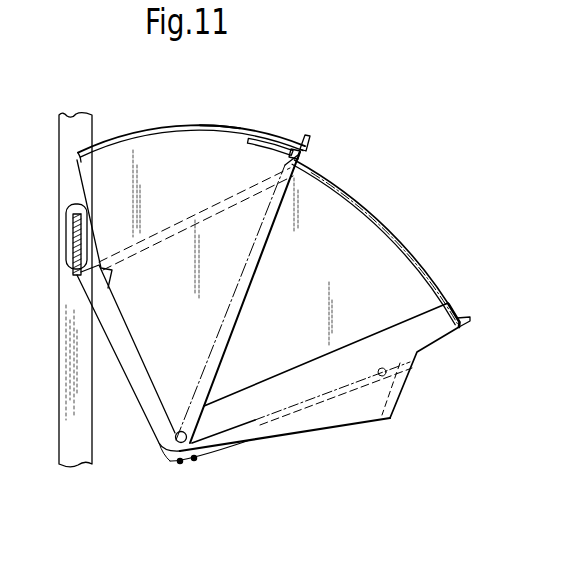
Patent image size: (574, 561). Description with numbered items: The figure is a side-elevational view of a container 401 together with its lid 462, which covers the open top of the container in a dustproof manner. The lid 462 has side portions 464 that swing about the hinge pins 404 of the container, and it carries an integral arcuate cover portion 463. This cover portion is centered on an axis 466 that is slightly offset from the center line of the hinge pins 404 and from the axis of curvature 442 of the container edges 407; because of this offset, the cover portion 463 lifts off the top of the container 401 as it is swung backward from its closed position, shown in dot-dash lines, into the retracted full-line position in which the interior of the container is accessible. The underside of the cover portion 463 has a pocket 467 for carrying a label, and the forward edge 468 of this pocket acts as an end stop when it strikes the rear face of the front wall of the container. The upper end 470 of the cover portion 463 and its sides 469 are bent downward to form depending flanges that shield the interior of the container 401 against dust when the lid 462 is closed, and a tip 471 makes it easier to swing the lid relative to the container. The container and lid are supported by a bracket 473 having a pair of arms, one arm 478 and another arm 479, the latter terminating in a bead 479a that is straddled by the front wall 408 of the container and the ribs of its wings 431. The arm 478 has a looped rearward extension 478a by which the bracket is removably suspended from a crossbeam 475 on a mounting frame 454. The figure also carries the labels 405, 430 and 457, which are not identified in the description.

The mounting frame 454 is at (76, 461).
The looped rearward extension 478a is at (66, 248).
The crossbeam 475 is at (81, 276).
The arm 478 is at (153, 413).
The lug 405 is at (109, 272).
The upper end 470 is at (76, 155).
The lid 462 is at (145, 128).
The sides 469 is at (176, 132).
The arcuate cover portion 463 is at (219, 127).
The pocket 467 is at (266, 143).
The tip 471 is at (309, 136).
The forward edge 468 is at (307, 154).
The container edges 407 is at (380, 219).
The container 401 is at (394, 265).
The front wall 408 is at (434, 345).
The side portions 464 is at (230, 240).
The hinge pins 404 is at (180, 431).
The arm 479 is at (283, 402).
The bead 479a is at (382, 372).
The wings 431 is at (335, 420).
The hidden edge 430 is at (392, 415).
The strap 457 is at (222, 452).
The axis 466 is at (195, 460).
The axis of curvature 442 is at (180, 464).
The bracket 473 is at (168, 462).